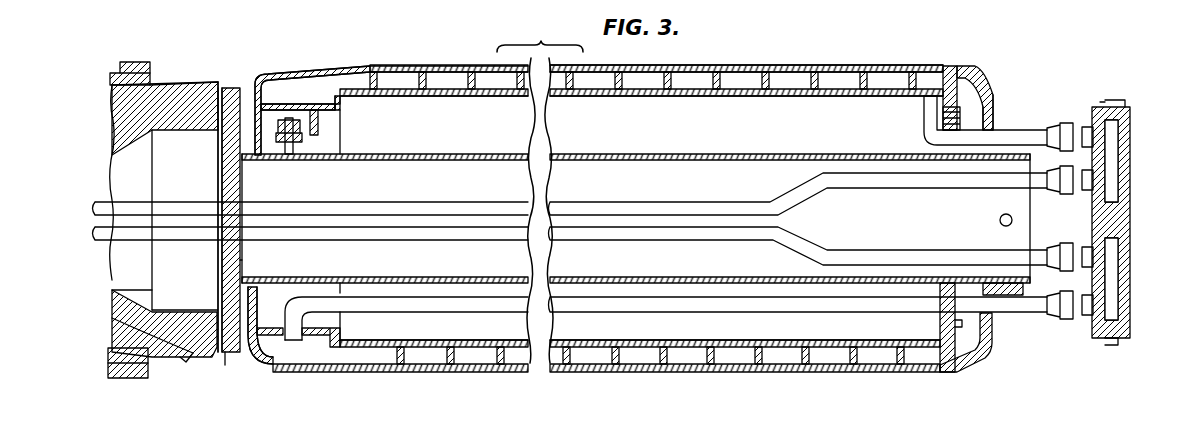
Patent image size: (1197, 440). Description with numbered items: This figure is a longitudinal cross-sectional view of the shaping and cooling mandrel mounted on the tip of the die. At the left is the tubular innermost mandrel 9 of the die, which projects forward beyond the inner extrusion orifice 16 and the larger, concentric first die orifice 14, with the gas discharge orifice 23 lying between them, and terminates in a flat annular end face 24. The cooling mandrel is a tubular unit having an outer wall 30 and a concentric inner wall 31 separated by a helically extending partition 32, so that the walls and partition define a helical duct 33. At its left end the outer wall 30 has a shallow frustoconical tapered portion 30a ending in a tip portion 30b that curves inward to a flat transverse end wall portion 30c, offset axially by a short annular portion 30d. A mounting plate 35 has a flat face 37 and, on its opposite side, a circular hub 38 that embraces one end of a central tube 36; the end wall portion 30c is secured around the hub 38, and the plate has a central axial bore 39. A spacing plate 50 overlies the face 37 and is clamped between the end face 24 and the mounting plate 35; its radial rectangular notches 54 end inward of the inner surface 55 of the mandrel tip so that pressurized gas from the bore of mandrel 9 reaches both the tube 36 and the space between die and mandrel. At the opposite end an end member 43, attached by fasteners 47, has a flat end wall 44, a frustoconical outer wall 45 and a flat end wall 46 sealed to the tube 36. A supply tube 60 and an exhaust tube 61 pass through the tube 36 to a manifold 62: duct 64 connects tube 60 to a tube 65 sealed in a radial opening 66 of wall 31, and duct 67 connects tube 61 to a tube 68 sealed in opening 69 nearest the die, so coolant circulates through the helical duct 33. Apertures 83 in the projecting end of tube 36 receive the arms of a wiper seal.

The tubular innermost mandrel 9 is at (192, 315).
The first circular die orifice 14 is at (156, 85).
The second circular die orifice 16 is at (196, 356).
The circular discharge orifice 23 is at (157, 88).
The annular transverse flat end face 24 is at (226, 348).
The outer wall 30 is at (782, 65).
The tapered portion 30a is at (340, 70).
The tip portion 30b is at (274, 98).
The flat transverse annular end wall portion 30c is at (277, 145).
The axially extending annular portion 30d is at (257, 100).
The inner wall 31 is at (637, 97).
The helically extending partition 32 is at (862, 83).
The helical duct 33 is at (737, 82).
The mounting plate 35 is at (240, 258).
The central tube 36 is at (650, 280).
The face of mounting plate 37 is at (218, 265).
The circular hub 38 is at (272, 286).
The central axial bore 39 is at (244, 196).
The end member 43 is at (992, 362).
The flat transverse annular end wall 44 is at (960, 95).
The frustoconical outer wall 45 is at (965, 75).
The flat transverse annular end wall 46 is at (1000, 117).
The fasteners 47 is at (965, 118).
The spacing plate 50 is at (229, 88).
The rectangular notches 54 is at (217, 160).
The inner surface 55 is at (160, 130).
The supply tube 60 is at (738, 205).
The exhaust tube 61 is at (721, 237).
The manifold 62 is at (1130, 221).
The duct 64 is at (1113, 157).
The tube 65 is at (928, 137).
The radial opening 66 is at (932, 108).
The duct 67 is at (1113, 281).
The tube 68 is at (445, 305).
The opening 69 is at (293, 340).
The apertures 83 is at (998, 215).